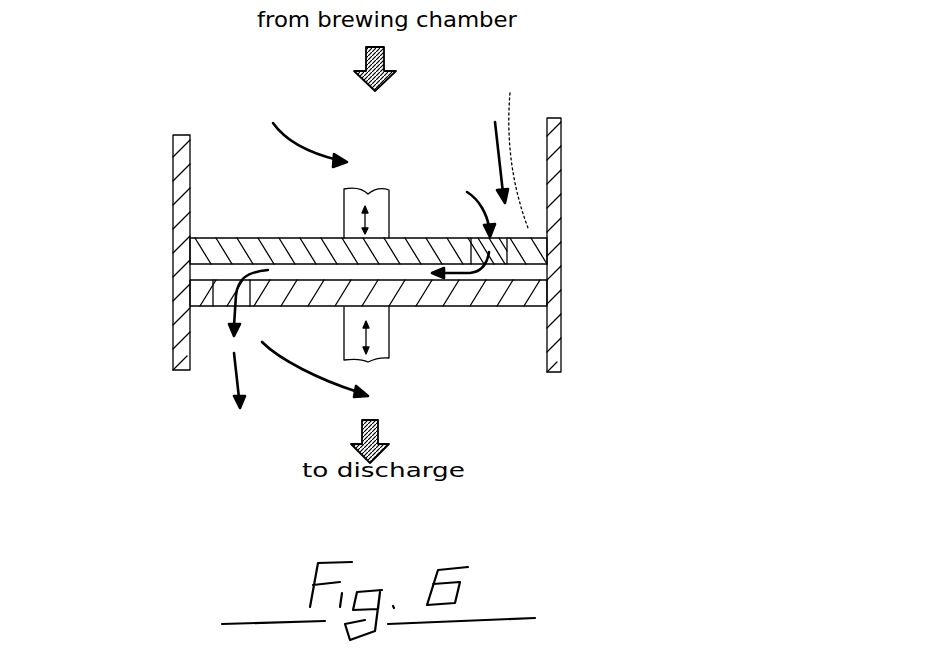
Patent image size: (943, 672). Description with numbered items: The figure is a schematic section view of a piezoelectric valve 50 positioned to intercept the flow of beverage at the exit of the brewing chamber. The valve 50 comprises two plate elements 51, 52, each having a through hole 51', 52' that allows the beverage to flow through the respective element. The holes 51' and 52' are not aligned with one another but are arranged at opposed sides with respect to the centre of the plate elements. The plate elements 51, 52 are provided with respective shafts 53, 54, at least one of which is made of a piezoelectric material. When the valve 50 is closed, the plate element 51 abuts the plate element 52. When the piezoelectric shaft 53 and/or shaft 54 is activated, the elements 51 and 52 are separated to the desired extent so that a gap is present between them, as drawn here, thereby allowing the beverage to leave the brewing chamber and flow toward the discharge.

The piezoelectric valve 50 is at (615, 233).
The plate element 51 is at (307, 207).
The through hole 51' is at (564, 206).
The plate element 52 is at (397, 361).
The through hole 52' is at (207, 392).
The shaft 53 is at (388, 210).
The shaft 54 is at (388, 345).